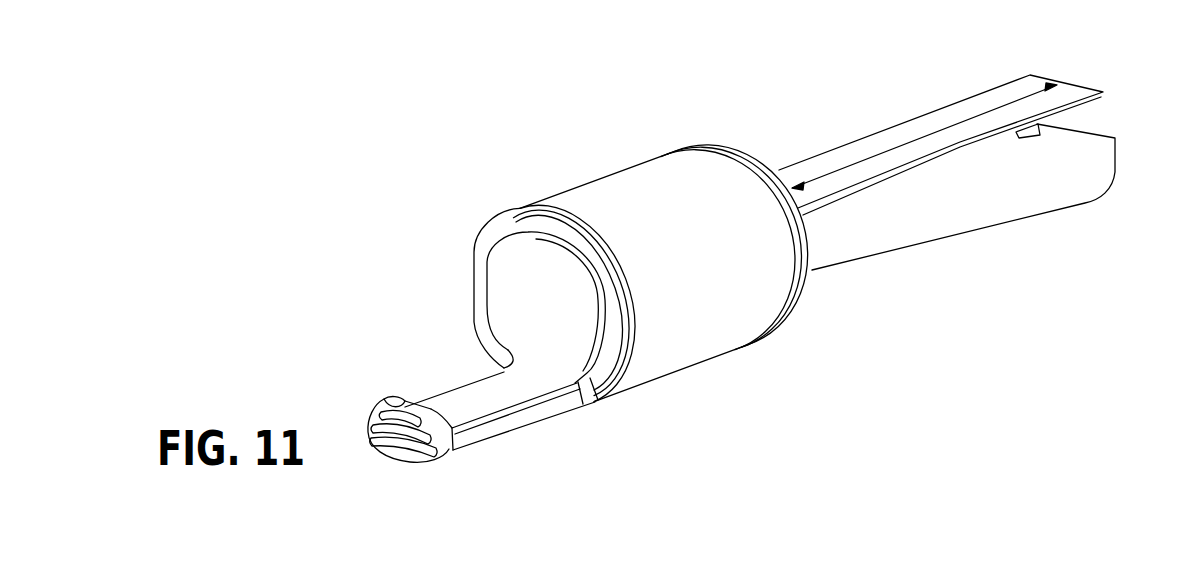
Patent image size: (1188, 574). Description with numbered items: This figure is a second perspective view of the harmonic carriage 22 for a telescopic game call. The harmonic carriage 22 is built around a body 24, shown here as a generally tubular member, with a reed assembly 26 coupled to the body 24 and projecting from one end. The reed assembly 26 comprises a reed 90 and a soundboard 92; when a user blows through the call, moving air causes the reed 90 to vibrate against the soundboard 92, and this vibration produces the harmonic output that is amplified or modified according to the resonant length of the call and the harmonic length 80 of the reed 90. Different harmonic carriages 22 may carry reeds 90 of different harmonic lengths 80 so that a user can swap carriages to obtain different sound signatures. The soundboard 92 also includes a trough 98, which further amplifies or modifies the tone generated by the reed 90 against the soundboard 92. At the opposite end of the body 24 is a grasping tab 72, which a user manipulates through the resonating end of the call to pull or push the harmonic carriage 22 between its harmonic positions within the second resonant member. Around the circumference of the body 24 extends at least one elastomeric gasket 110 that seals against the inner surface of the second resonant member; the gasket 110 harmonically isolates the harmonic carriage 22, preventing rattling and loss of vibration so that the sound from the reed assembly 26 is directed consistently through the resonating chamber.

The harmonic carriage 22 is at (664, 280).
The body 24 is at (625, 202).
The reed assembly 26 is at (994, 249).
The grasping tab 72 is at (399, 404).
The harmonic length 80 is at (900, 145).
The reed 90 is at (971, 125).
The soundboard 92 is at (994, 200).
The trough 98 is at (1020, 133).
The gasket 110 is at (533, 202).